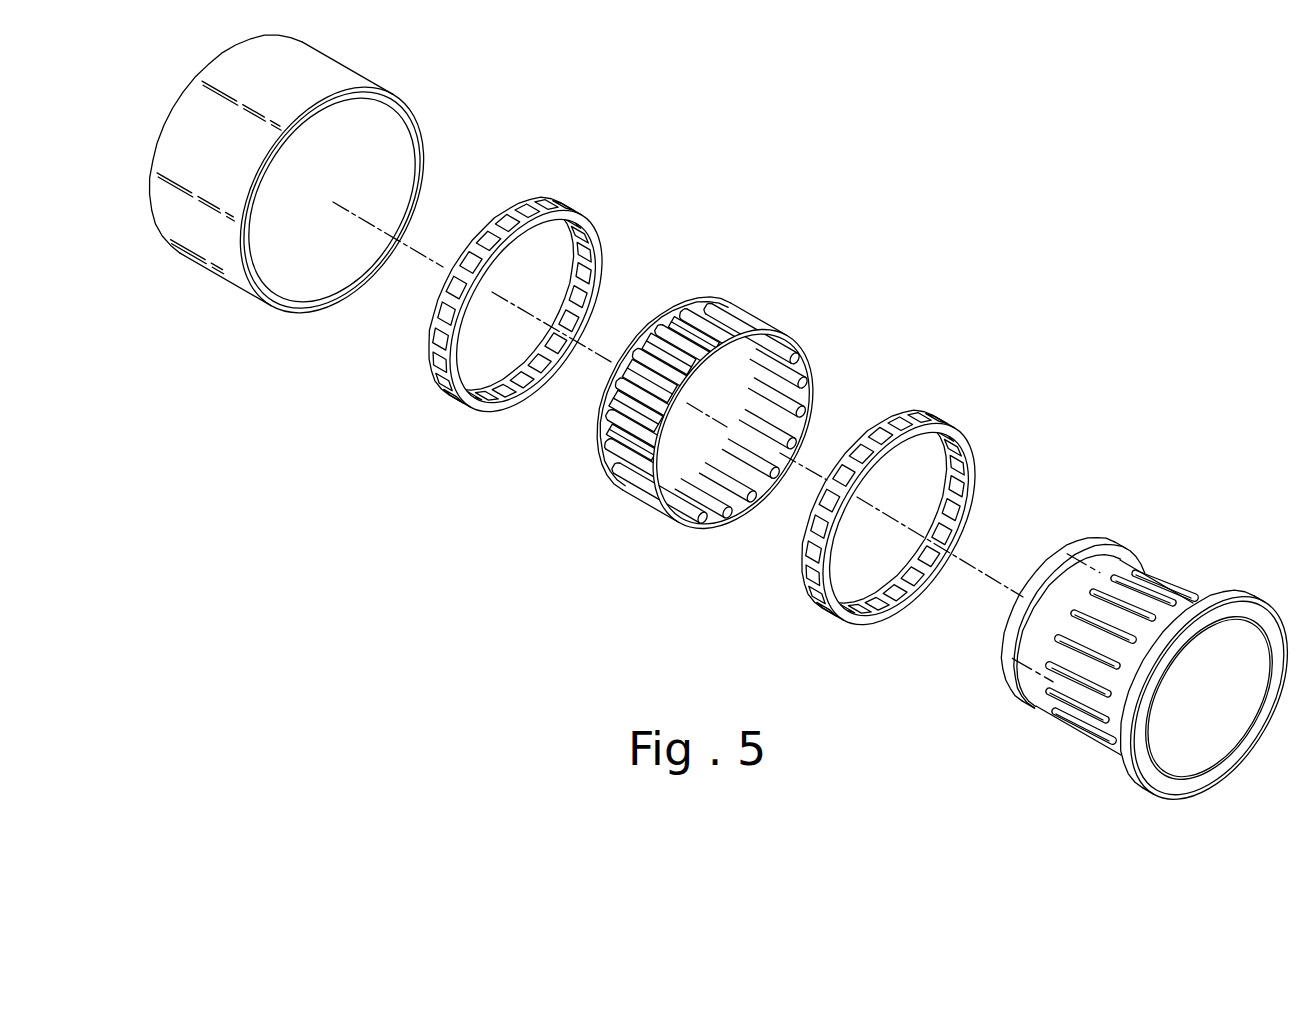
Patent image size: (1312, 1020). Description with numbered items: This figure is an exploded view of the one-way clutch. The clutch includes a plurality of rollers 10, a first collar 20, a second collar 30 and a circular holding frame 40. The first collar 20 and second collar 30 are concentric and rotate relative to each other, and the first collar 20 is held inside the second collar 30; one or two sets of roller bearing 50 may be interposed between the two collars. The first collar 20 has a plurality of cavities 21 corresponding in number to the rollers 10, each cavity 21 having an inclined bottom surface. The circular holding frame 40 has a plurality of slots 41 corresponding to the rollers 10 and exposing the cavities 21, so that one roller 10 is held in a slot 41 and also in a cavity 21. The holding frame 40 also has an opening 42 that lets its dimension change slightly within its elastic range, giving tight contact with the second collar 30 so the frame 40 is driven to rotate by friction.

The roller 10 is at (721, 522).
The first collar 20 is at (1139, 660).
The cavity 21 is at (1173, 573).
The second collar 30 is at (337, 75).
The circular holding frame 40 is at (715, 401).
The slot 41 is at (668, 337).
The opening 42 is at (677, 308).
The roller bearing 50 is at (572, 222).